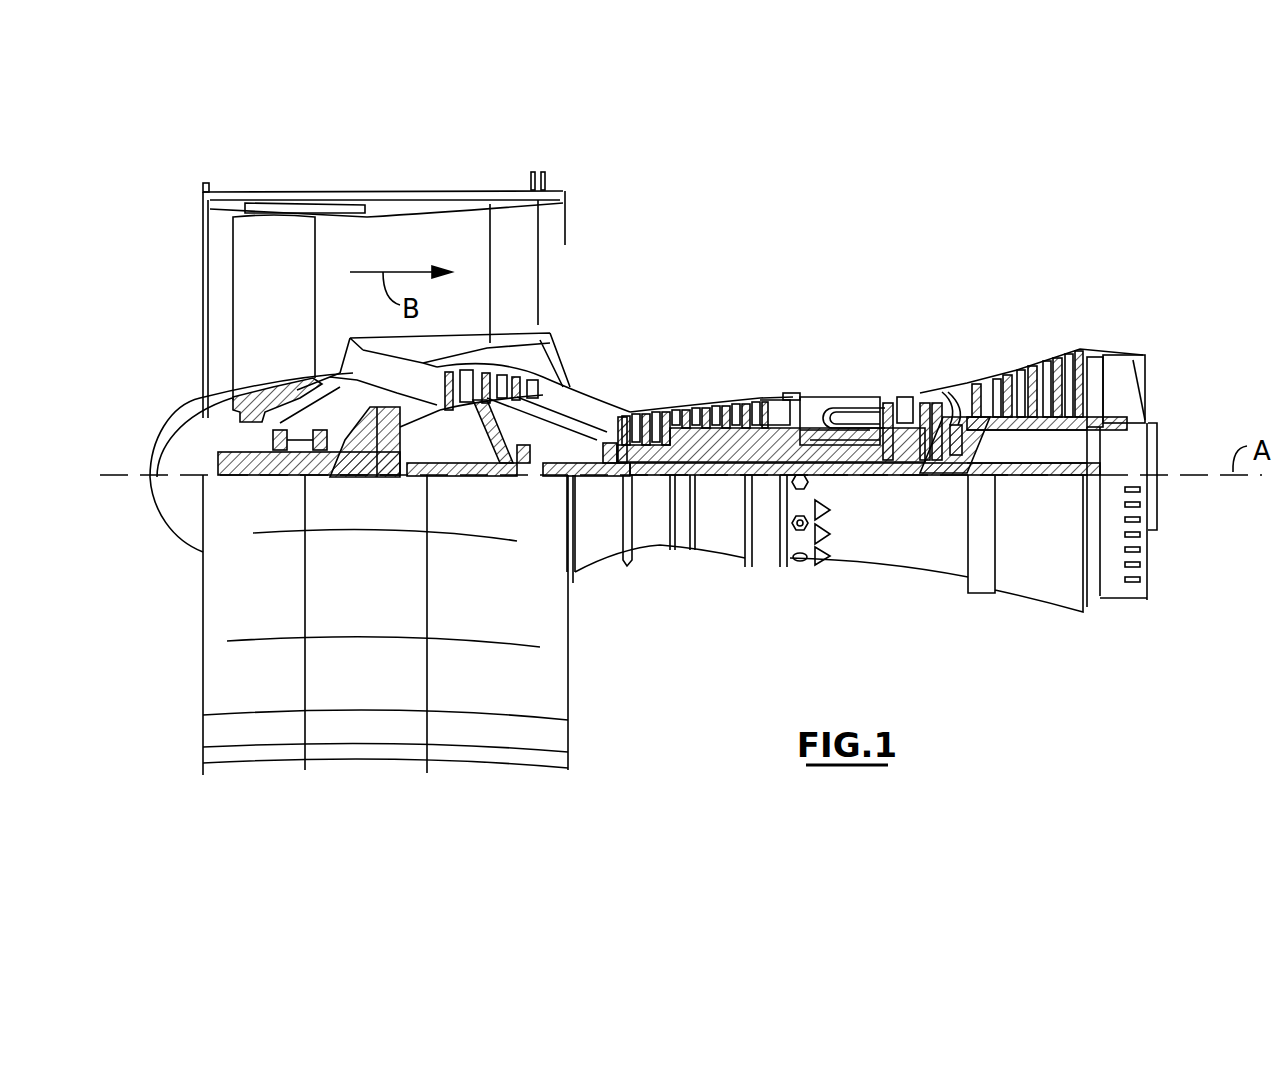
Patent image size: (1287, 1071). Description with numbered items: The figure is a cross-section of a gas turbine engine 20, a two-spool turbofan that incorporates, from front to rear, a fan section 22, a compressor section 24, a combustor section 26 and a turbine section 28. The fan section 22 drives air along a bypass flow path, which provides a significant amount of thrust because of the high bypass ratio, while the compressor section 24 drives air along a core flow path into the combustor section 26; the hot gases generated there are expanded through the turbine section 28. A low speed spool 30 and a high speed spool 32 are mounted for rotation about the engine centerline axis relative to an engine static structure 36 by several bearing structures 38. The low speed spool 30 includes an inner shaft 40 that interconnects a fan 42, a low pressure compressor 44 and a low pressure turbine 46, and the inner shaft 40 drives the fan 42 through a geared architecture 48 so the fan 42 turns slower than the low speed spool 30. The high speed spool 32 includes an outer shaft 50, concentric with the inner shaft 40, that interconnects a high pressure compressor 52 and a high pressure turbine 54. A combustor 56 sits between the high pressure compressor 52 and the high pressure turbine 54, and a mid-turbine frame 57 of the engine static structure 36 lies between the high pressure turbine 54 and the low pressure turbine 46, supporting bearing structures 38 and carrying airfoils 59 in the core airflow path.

The gas turbine engine 20 is at (681, 321).
The fan section 22 is at (316, 184).
The compressor section 24 is at (617, 383).
The combustor section 26 is at (838, 366).
The turbine section 28 is at (988, 330).
The low speed spool 30 is at (723, 490).
The high speed spool 32 is at (762, 440).
The engine static structure 36 is at (764, 575).
The bearing structures 38 is at (307, 477).
The inner shaft 40 is at (593, 483).
The fan 42 is at (288, 320).
The low pressure compressor 44 is at (503, 377).
The low pressure turbine 46 is at (1035, 370).
The geared architecture 48 is at (397, 477).
The outer shaft 50 is at (853, 468).
The high pressure compressor 52 is at (700, 443).
The high pressure turbine 54 is at (902, 397).
The combustor 56 is at (840, 417).
The mid-turbine frame 57 is at (952, 384).
The airfoils 59 is at (980, 435).